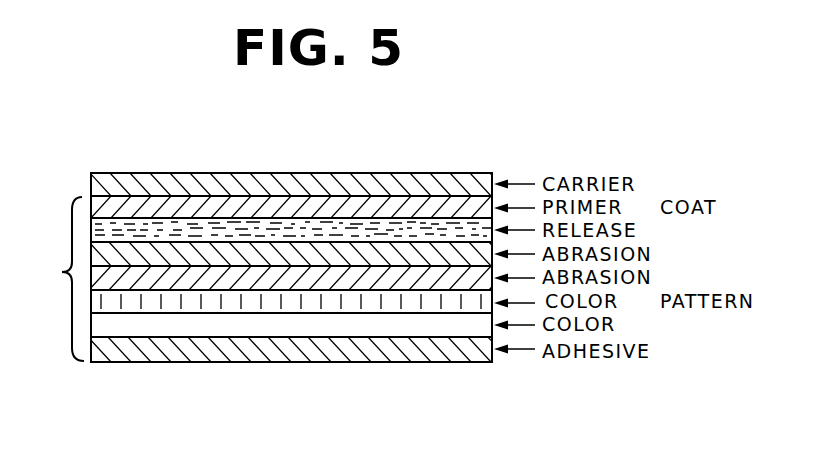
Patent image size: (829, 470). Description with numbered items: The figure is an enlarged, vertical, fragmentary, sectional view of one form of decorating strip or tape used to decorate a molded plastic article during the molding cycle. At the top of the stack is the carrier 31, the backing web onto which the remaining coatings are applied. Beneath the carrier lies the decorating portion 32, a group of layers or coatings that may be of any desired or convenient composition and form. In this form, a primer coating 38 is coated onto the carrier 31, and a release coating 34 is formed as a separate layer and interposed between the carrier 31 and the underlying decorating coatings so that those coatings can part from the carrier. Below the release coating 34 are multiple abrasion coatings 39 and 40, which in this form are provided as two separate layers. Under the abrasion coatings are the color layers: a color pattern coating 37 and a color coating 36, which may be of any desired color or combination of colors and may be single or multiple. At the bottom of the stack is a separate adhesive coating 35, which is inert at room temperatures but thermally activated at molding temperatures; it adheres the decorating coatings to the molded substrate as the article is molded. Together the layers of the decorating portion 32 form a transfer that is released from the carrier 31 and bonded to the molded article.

The carrier 31 is at (93, 188).
The decorating coating layers 32 is at (258, 279).
The release coating 34 is at (340, 225).
The adhesive coating 35 is at (423, 352).
The color coating 36 is at (303, 295).
The color pattern coating 37 is at (375, 330).
The primer coating 38 is at (428, 206).
The abrasion coating 39 is at (255, 258).
The abrasion coating 40 is at (243, 283).